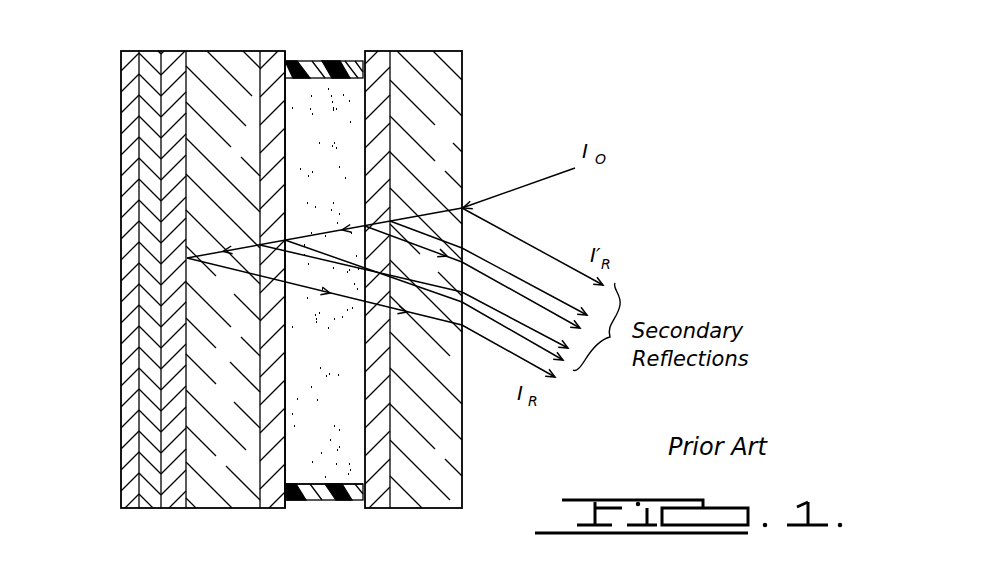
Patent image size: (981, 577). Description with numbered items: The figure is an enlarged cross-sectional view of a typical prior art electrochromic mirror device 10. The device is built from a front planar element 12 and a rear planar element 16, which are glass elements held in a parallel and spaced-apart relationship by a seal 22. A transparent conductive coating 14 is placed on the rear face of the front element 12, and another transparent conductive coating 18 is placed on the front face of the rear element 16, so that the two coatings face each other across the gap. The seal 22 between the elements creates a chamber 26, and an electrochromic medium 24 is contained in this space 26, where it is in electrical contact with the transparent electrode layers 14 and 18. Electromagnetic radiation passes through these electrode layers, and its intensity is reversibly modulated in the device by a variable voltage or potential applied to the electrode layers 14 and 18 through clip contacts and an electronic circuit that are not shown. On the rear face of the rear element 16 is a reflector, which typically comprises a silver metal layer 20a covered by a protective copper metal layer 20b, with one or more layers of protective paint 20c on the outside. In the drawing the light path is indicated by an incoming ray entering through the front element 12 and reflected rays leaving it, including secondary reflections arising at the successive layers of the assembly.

The electrochromic mirror device 10 is at (642, 111).
The front planar element 12 is at (438, 77).
The transparent conductive coating 14 is at (380, 154).
The rear planar element 16 is at (203, 492).
The transparent conductive coating 18 is at (265, 500).
The silver metal layer 20a is at (173, 63).
The protective copper metal layer 20b is at (150, 58).
The protective paint layer 20c is at (128, 125).
The seal 22 is at (297, 72).
The electrochromic medium 24 is at (333, 467).
The chamber 26 is at (347, 438).